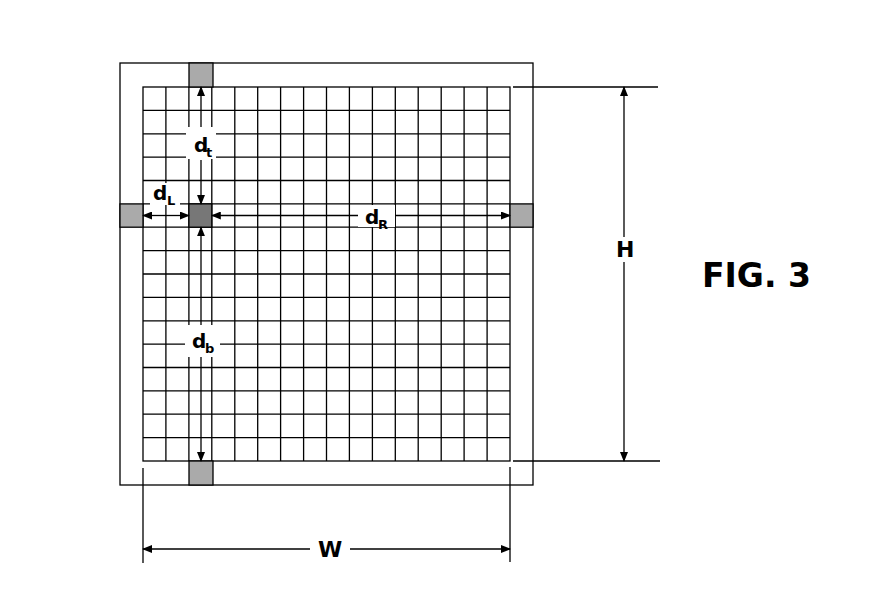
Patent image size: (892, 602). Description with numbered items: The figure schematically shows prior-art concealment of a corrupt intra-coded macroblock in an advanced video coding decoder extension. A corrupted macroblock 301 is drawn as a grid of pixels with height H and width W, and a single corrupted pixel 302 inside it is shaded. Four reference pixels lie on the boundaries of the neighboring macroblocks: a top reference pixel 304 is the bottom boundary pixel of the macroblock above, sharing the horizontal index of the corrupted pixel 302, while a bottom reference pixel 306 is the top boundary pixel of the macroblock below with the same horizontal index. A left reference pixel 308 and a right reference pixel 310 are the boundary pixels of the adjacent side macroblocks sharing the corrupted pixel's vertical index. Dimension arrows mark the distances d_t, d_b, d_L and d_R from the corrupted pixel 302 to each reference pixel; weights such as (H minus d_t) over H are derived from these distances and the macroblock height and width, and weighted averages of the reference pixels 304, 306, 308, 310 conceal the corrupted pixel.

The corrupted macroblock 301 is at (470, 87).
The corrupted pixel 302 is at (196, 215).
The top reference pixel 304 is at (200, 68).
The bottom reference pixel 306 is at (197, 477).
The left reference pixel 308 is at (130, 212).
The right reference pixel 310 is at (523, 212).